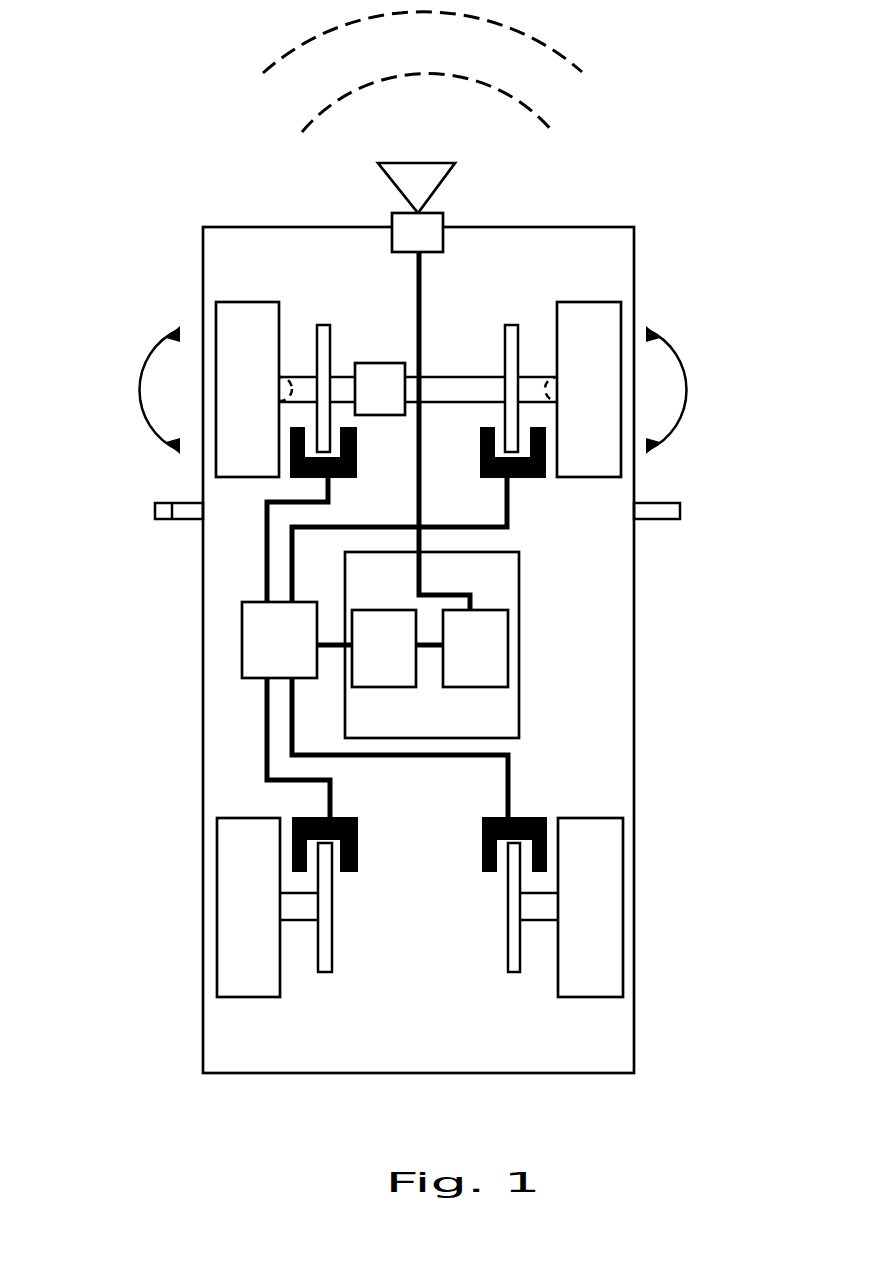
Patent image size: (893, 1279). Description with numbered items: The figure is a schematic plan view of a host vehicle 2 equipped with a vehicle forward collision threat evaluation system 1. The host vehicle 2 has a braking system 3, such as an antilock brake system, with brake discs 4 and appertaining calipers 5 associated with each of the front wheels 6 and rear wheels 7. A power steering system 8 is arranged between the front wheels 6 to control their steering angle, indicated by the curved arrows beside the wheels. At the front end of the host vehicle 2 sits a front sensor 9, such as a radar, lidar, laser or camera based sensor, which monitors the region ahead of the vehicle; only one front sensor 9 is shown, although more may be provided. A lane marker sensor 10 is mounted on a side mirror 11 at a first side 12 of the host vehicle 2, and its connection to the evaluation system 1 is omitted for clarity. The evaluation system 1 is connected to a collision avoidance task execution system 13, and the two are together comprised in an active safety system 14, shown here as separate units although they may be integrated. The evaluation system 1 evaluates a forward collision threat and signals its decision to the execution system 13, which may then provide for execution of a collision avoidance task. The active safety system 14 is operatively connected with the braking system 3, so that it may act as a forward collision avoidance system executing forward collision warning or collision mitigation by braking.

The vehicle forward collision threat evaluation system 1 is at (466, 660).
The host vehicle 2 is at (397, 609).
The braking system 3 is at (270, 660).
The brake discs 4 is at (322, 335).
The calipers 5 is at (290, 478).
The front wheels 6 is at (233, 408).
The rear wheels 7 is at (233, 927).
The power steering system 8 is at (371, 407).
The front sensor 9 is at (433, 238).
The lane marker sensor 10 is at (157, 514).
The side mirror 11 is at (186, 520).
The first side 12 is at (203, 773).
The collision avoidance task execution system 13 is at (368, 660).
The active safety system 14 is at (503, 717).